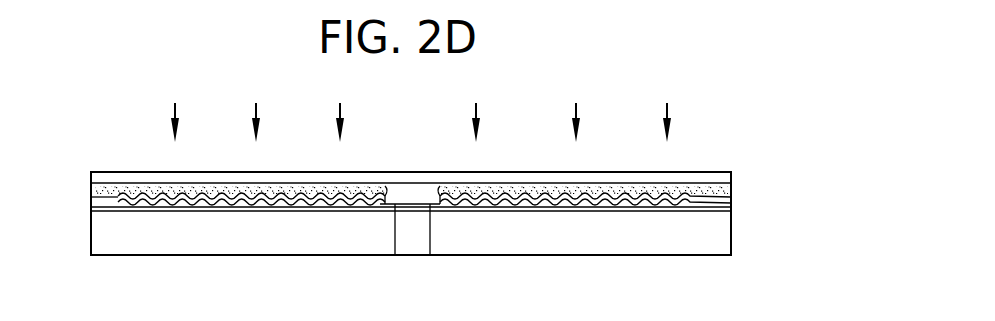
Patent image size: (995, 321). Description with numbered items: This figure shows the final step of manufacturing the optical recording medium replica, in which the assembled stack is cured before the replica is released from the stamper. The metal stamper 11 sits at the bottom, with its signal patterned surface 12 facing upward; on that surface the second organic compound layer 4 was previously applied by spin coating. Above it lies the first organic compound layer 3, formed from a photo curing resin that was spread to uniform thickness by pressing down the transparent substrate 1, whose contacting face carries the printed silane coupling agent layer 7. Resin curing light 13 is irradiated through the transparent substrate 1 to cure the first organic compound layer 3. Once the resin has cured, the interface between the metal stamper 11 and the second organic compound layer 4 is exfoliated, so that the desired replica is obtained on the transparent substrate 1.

The transparent substrate 1 is at (703, 170).
The first organic compound layer 3 is at (731, 191).
The second organic compound layer 4 is at (485, 205).
The silane coupling agent layer 7 is at (115, 190).
The metal stamper 11 is at (658, 202).
The signal patterned surface 12 is at (572, 202).
The resin curing light 13 is at (669, 109).